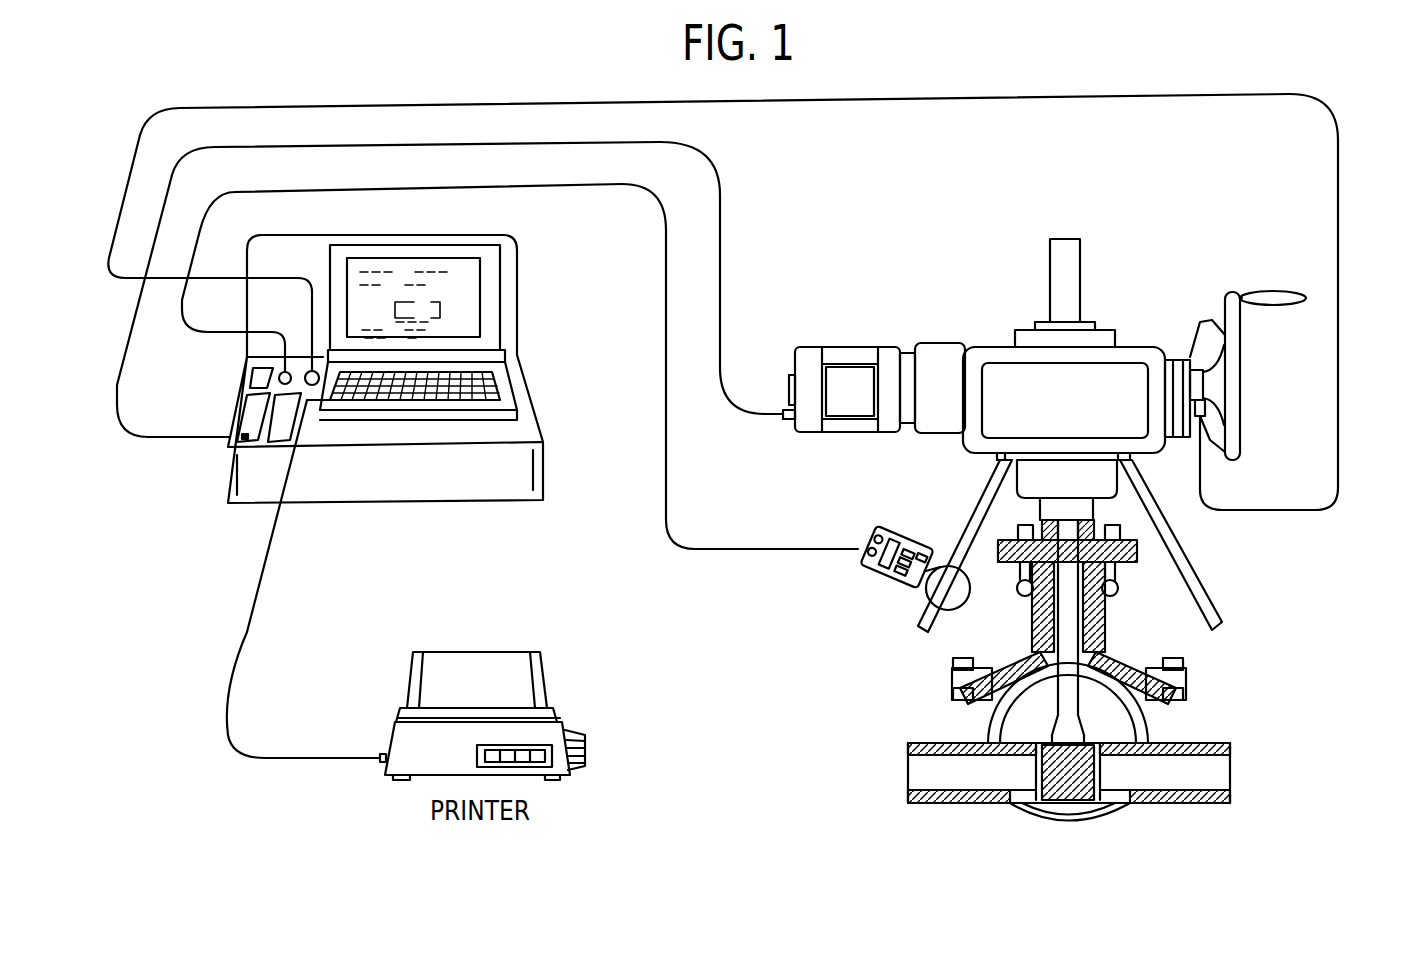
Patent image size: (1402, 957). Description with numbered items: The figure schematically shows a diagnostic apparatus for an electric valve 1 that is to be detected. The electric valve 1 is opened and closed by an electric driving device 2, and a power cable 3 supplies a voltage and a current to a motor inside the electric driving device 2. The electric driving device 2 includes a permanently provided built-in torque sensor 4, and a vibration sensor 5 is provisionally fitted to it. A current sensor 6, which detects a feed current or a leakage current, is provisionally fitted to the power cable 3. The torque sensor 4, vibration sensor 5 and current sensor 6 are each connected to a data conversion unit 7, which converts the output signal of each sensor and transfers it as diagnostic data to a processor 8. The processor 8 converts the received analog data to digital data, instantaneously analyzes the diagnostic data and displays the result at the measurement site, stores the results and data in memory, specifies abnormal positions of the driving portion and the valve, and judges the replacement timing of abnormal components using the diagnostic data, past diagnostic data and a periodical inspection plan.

The electric valve 1 is at (1090, 270).
The electric driving device 2 is at (1140, 347).
The power cable 3 is at (975, 520).
The torque sensor 4 is at (787, 421).
The vibration sensor 5 is at (1205, 418).
The current sensor 6 is at (880, 586).
The data conversion unit 7 is at (545, 470).
The processor 8 is at (513, 378).